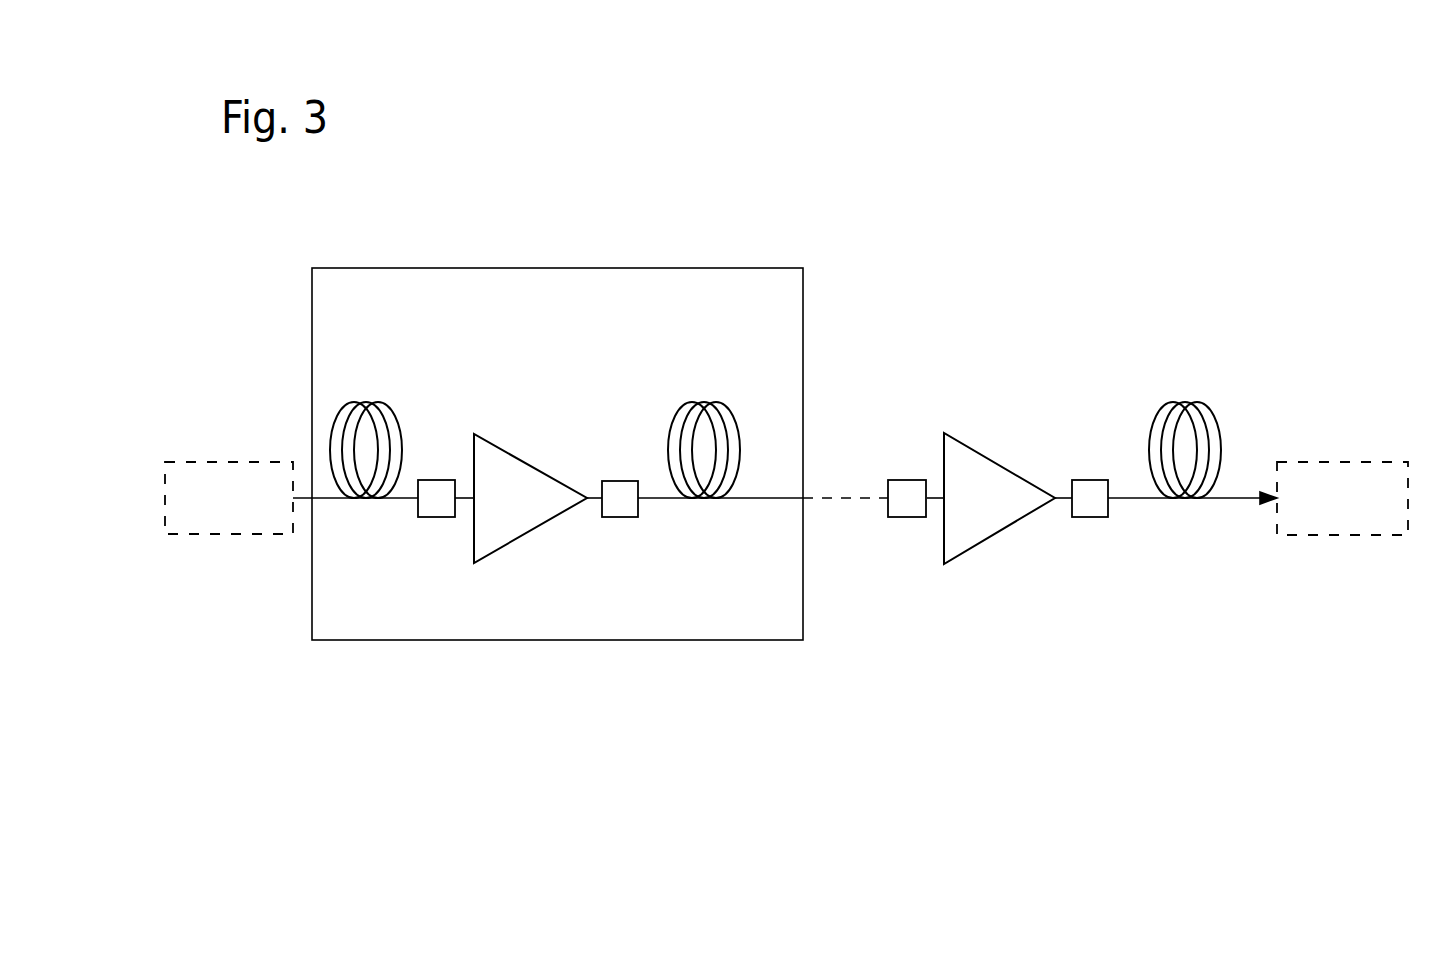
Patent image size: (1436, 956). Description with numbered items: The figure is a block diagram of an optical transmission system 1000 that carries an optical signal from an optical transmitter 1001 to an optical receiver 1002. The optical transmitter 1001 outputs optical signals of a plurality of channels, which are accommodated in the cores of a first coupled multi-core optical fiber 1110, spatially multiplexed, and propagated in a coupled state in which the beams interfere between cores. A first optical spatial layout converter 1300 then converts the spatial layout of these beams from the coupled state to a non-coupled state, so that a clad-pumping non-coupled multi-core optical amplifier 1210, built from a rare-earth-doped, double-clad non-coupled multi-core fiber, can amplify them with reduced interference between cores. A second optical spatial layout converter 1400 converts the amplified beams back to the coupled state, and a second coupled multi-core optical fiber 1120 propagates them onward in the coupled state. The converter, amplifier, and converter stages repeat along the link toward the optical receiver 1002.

The optical transmission system 1000 is at (571, 268).
The optical transmitter 1001 is at (205, 534).
The optical receiver 1002 is at (1320, 535).
The first coupled multi-core optical fiber 1110 is at (378, 401).
The second coupled multi-core optical fiber 1120 is at (717, 402).
The clad-pumping non-coupled multi-core optical amplifier 1210 is at (515, 457).
The first optical spatial layout converter 1300 is at (425, 517).
The second optical spatial layout converter 1400 is at (609, 517).